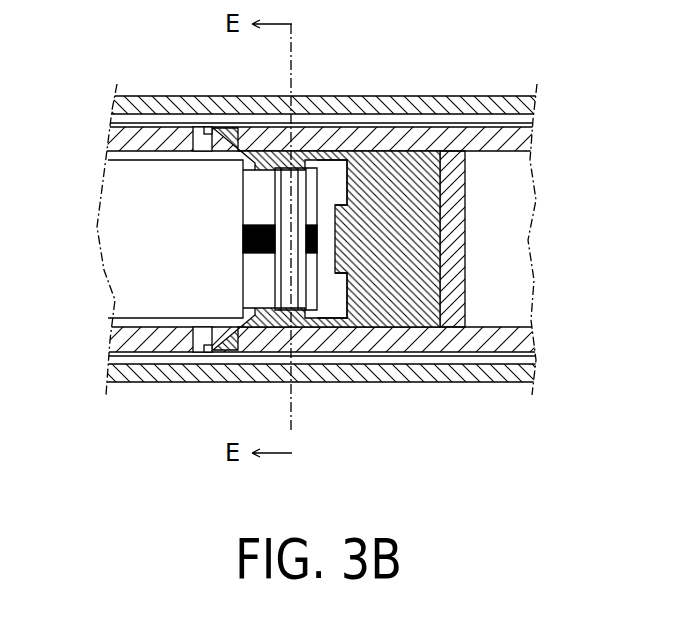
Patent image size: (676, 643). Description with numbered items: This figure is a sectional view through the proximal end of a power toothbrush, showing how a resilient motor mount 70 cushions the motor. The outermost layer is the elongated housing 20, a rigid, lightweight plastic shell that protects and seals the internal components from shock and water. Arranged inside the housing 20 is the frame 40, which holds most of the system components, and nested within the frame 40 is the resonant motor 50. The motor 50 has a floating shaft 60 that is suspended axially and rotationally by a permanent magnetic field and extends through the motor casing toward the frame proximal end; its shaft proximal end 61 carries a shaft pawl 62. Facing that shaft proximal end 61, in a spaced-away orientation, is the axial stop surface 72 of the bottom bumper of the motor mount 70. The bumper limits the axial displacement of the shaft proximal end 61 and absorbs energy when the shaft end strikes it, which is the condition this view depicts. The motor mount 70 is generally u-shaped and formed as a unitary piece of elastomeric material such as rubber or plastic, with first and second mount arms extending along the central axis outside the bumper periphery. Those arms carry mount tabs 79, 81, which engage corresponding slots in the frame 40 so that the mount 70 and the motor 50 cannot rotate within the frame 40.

The housing 20 is at (471, 368).
The frame 40 is at (113, 138).
The motor 50 is at (165, 253).
The floating shaft 60 is at (257, 224).
The shaft proximal end 61 is at (314, 224).
The shaft pawl 62 is at (299, 312).
The resilient motor mount 70 is at (397, 186).
The axial stop surface 72 is at (330, 306).
The mount tab 79 is at (201, 325).
The mount tab 81 is at (212, 126).